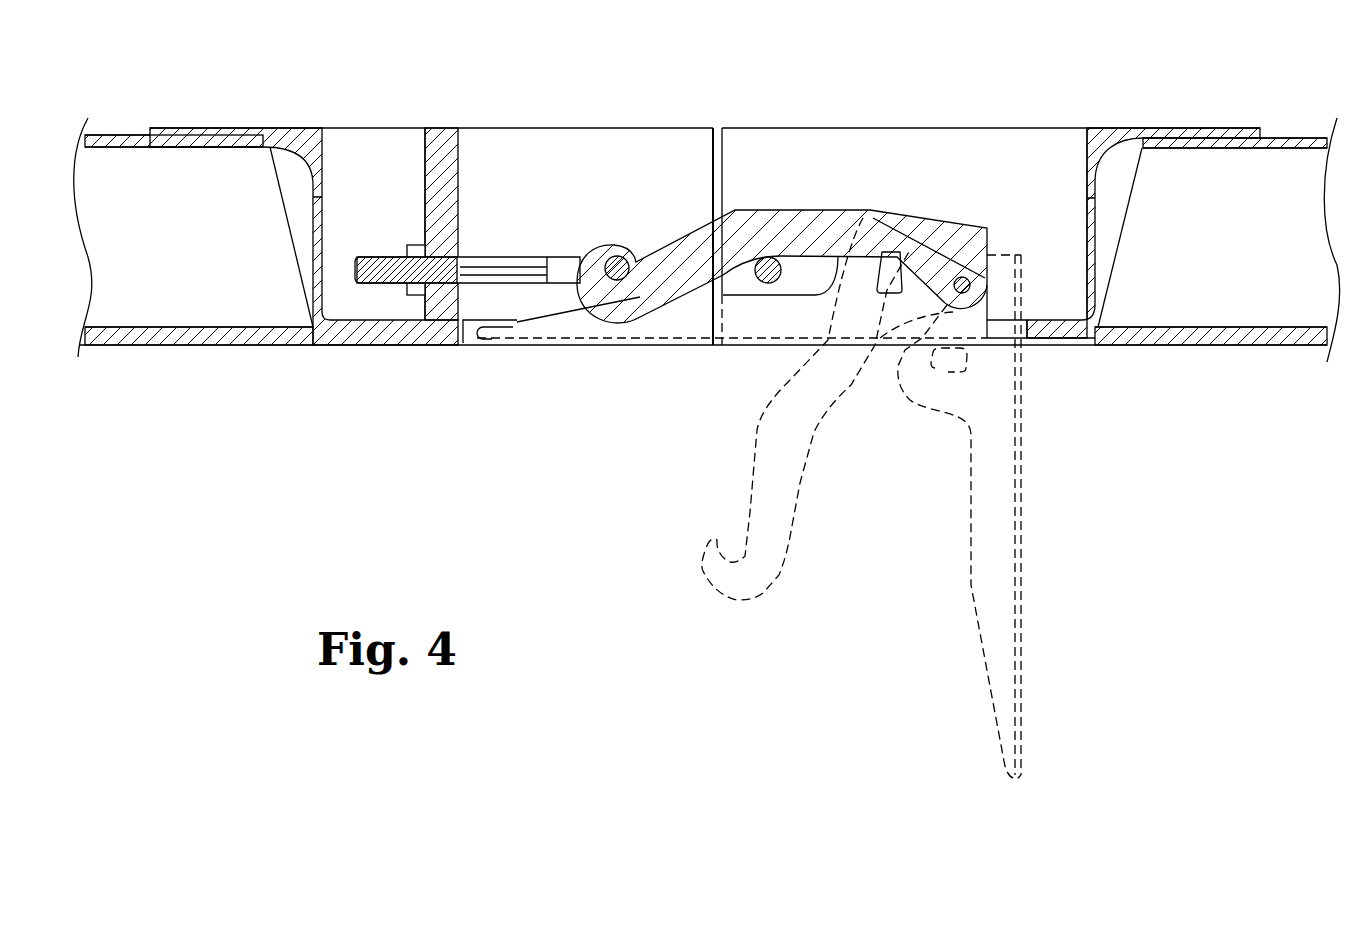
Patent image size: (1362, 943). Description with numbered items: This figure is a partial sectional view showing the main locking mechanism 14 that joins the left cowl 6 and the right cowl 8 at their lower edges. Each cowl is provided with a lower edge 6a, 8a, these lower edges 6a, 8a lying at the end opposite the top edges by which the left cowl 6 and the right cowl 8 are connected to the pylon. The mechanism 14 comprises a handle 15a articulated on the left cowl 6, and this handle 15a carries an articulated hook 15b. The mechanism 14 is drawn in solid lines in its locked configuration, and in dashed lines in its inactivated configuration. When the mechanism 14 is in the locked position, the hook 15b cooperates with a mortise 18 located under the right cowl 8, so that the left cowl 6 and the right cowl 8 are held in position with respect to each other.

The left cowl 6 is at (1196, 288).
The lower edge of left cowl 6a is at (713, 173).
The right cowl 8 is at (193, 283).
The lower edge of right cowl 8a is at (722, 144).
The main locking mechanism 14 is at (680, 405).
The handle 15a is at (556, 327).
The hook 15b is at (805, 232).
The mortise 18 is at (622, 260).